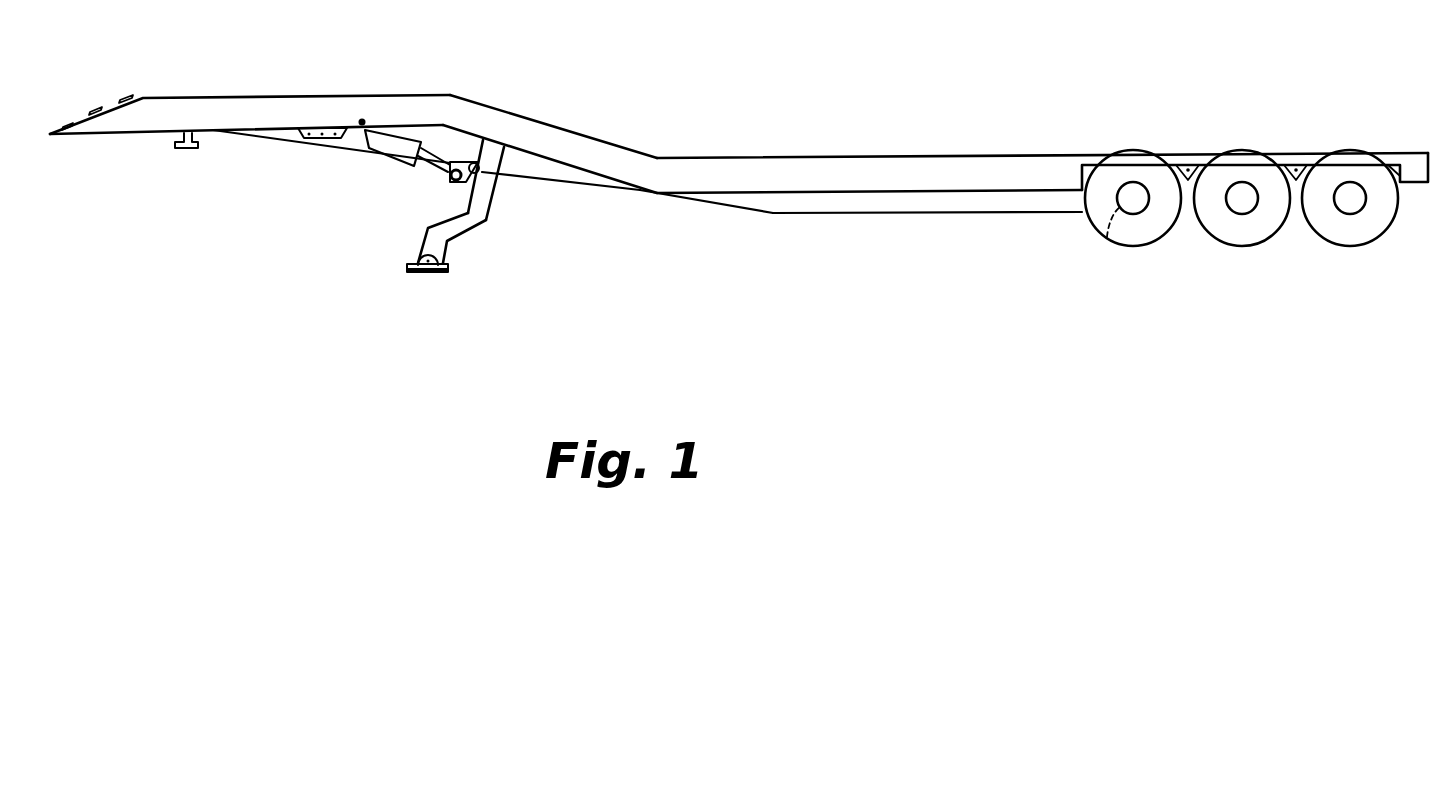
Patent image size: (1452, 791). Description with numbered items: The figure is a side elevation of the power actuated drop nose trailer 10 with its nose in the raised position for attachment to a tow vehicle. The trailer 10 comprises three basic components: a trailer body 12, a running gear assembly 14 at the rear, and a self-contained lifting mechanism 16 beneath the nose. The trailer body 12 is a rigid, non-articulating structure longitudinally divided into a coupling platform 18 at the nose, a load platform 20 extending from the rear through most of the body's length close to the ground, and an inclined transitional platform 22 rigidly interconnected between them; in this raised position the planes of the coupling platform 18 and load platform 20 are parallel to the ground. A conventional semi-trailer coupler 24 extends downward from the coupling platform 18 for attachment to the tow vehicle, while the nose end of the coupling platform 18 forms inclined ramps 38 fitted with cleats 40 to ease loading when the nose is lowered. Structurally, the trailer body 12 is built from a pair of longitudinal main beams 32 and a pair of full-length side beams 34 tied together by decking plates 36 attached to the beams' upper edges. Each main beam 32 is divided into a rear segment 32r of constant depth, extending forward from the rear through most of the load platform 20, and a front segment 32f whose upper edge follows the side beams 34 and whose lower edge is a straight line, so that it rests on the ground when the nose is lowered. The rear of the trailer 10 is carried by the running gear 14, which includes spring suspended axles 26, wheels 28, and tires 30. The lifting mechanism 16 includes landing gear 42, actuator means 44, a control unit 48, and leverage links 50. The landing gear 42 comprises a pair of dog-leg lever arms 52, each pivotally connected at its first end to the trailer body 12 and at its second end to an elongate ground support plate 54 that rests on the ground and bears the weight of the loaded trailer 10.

The power actuated drop nose trailer 10 is at (748, 181).
The trailer body 12 is at (1042, 118).
The running gear assembly 14 is at (1251, 224).
The lifting mechanism 16 is at (412, 181).
The coupling platform 18 is at (250, 91).
The load platform 20 is at (912, 150).
The transitional platform 22 is at (517, 107).
The semi-trailer coupler 24 is at (190, 150).
The axle 26 is at (1107, 238).
The wheel 28 is at (1350, 203).
The tire 30 is at (1373, 218).
The main beam 32 is at (782, 216).
The main beam front segment 32f is at (578, 174).
The main beam rear segment 32r is at (920, 204).
The side beam 34 is at (783, 170).
The decking plate 36 is at (728, 157).
The inclined ramp 38 is at (110, 108).
The cleat 40 is at (90, 113).
The landing gear 42 is at (453, 243).
The actuator means 44 is at (398, 146).
The control unit 48 is at (327, 142).
The leverage link 50 is at (443, 182).
The lever arm 52 is at (468, 214).
The ground support plate 54 is at (433, 274).